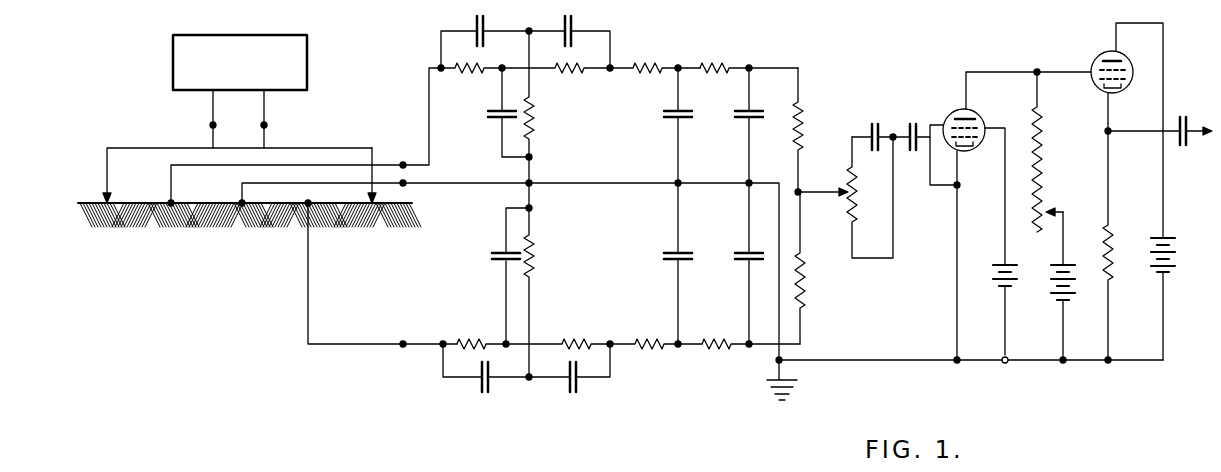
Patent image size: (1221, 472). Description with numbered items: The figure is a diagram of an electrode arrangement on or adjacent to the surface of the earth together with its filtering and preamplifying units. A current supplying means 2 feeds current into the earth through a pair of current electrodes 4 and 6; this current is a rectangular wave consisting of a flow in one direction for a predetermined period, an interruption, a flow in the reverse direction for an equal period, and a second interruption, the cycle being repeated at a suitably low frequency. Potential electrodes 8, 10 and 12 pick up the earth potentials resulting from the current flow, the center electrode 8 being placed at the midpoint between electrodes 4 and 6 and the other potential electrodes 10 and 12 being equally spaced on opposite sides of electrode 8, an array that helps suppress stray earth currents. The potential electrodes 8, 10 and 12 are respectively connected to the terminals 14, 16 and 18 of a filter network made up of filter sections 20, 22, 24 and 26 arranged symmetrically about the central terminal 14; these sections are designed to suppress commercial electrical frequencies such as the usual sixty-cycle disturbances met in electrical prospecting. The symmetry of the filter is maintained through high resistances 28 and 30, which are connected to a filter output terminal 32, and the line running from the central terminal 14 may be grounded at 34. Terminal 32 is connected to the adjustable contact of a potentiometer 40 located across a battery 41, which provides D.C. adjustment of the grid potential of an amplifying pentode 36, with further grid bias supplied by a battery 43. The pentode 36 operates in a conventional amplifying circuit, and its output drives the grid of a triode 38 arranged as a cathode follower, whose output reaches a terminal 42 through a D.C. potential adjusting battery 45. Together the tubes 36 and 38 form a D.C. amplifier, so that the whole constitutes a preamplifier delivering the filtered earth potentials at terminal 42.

The current supplying means 2 is at (307, 62).
The current electrode 4 is at (105, 201).
The current electrode 6 is at (370, 201).
The center potential electrode 8 is at (241, 202).
The potential electrode 10 is at (170, 202).
The potential electrode 12 is at (308, 202).
The central terminal 14 is at (405, 186).
The terminal 16 is at (402, 164).
The terminal 18 is at (404, 342).
The filter section 20 is at (530, 28).
The filter section 22 is at (513, 386).
The filter section 24 is at (707, 56).
The filter section 26 is at (689, 352).
The high resistance 28 is at (805, 125).
The high resistance 30 is at (806, 285).
The filter output terminal 32 is at (801, 191).
The ground 34 is at (790, 368).
The amplifying pentode 36 is at (950, 116).
The triode 38 is at (1096, 58).
The potentiometer 40 is at (858, 197).
The battery 41 is at (872, 124).
The output terminal 42 is at (1198, 146).
The grid bias battery 43 is at (914, 124).
The D.C. potential adjusting battery 45 is at (1172, 148).